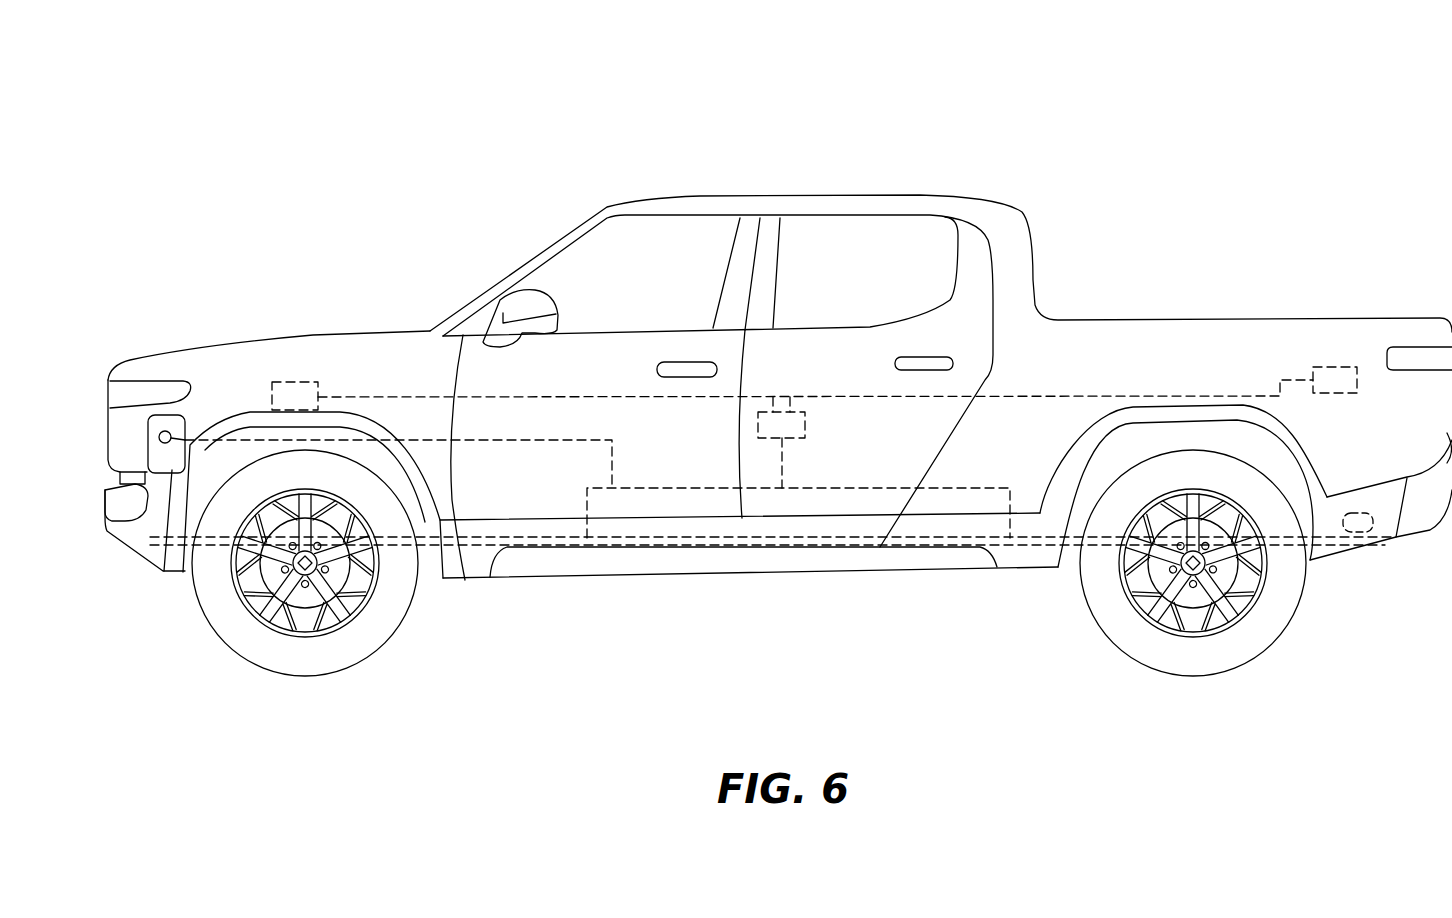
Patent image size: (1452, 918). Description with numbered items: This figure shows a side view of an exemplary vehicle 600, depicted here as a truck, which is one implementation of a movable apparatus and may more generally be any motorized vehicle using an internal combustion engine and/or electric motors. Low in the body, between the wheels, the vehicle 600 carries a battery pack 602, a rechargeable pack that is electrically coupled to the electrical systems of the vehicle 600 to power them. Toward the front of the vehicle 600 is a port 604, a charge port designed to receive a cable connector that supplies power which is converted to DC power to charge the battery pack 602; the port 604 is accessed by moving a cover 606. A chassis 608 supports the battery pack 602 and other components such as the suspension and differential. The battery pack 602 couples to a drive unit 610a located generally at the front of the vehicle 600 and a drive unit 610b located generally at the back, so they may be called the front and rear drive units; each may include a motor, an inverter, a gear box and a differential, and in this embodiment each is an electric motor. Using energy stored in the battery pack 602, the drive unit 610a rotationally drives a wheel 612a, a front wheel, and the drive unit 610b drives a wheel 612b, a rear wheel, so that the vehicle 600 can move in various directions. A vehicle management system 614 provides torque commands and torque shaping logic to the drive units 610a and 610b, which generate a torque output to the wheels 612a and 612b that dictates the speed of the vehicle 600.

The vehicle 600 is at (336, 98).
The battery pack 602 is at (587, 522).
The port 604 is at (163, 430).
The cover 606 is at (106, 532).
The chassis 608 is at (1020, 547).
The drive unit 610a is at (293, 382).
The drive unit 610b is at (1333, 367).
The wheel 612a is at (217, 640).
The wheel 612b is at (1307, 597).
The vehicle management system 614 is at (790, 440).